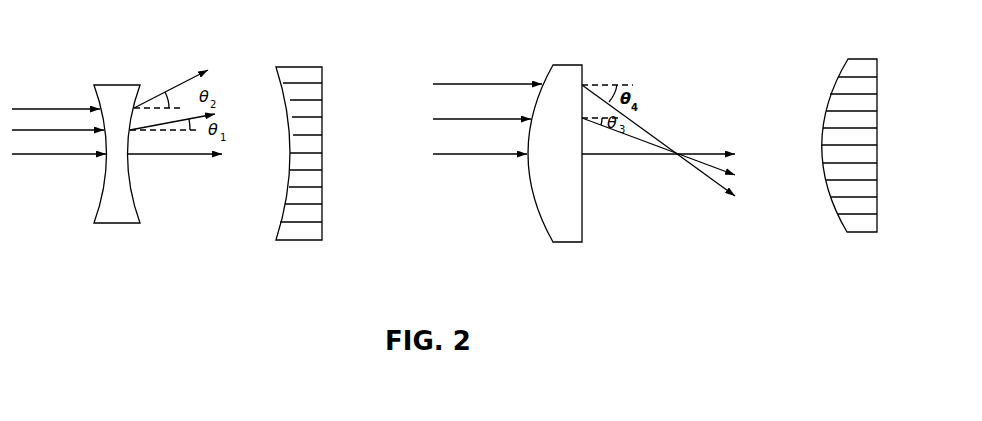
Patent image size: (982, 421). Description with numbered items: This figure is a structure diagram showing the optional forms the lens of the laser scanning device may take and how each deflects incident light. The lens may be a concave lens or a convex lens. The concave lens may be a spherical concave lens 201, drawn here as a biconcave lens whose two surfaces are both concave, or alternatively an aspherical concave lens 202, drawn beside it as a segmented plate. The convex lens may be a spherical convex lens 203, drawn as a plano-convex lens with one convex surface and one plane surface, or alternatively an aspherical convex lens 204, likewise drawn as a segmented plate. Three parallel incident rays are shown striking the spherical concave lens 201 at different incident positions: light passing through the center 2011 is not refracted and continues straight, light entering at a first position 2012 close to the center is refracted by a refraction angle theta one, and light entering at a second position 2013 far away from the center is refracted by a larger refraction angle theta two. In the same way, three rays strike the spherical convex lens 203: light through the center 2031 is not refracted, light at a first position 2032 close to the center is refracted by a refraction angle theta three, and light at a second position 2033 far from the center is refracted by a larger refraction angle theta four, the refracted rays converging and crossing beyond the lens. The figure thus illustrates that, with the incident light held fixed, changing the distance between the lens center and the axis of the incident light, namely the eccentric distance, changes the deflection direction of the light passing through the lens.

The spherical concave lens 201 is at (110, 85).
The aspherical concave lens 202 is at (302, 67).
The spherical convex lens 203 is at (563, 65).
The aspherical convex lens 204 is at (863, 59).
The center of the spherical concave lens 2011 is at (59, 164).
The first position close to the center 2012 is at (58, 122).
The second position far away from the center 2013 is at (56, 100).
The center of the spherical convex lens 2031 is at (480, 165).
The first position close to the center 2032 is at (482, 110).
The second position far away from the center 2033 is at (487, 75).